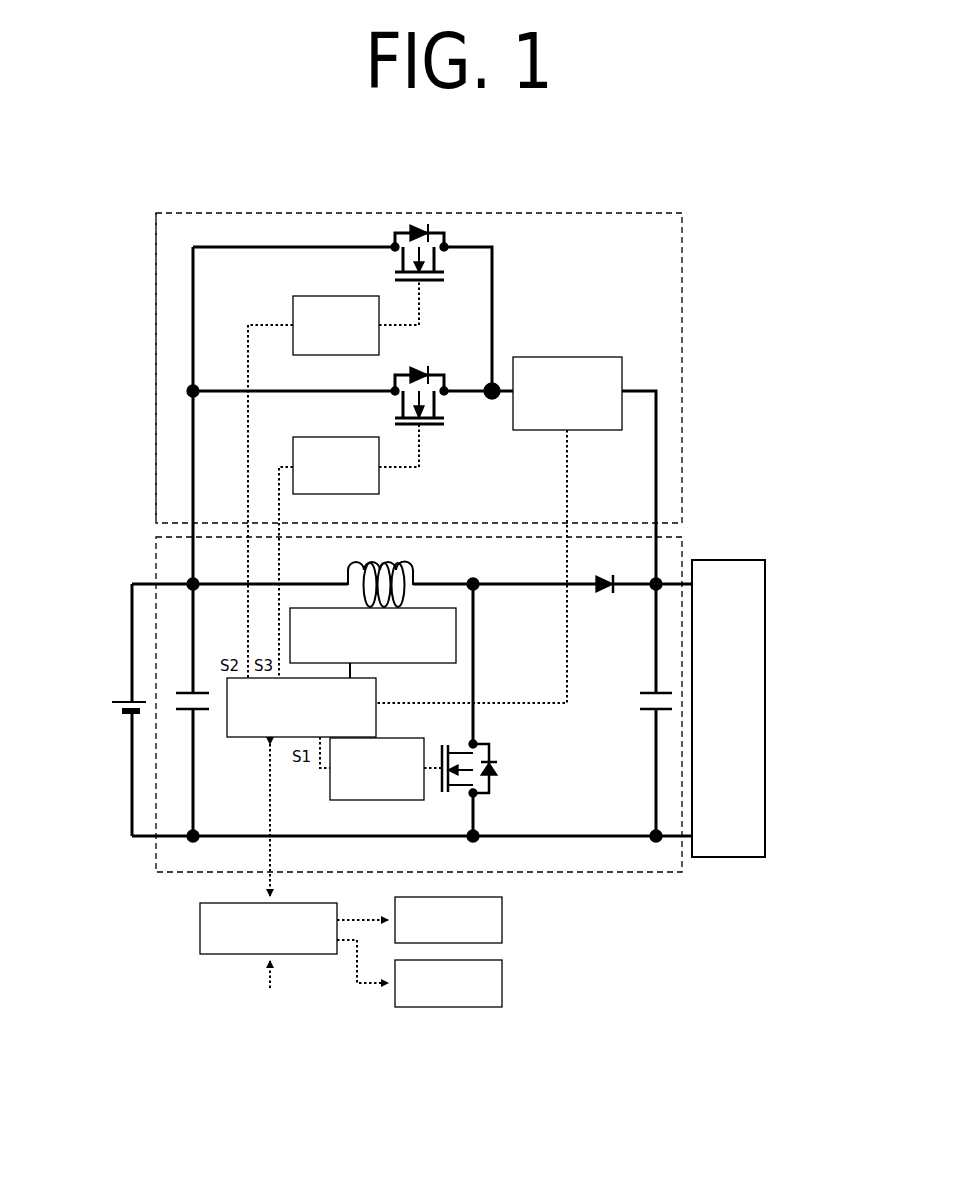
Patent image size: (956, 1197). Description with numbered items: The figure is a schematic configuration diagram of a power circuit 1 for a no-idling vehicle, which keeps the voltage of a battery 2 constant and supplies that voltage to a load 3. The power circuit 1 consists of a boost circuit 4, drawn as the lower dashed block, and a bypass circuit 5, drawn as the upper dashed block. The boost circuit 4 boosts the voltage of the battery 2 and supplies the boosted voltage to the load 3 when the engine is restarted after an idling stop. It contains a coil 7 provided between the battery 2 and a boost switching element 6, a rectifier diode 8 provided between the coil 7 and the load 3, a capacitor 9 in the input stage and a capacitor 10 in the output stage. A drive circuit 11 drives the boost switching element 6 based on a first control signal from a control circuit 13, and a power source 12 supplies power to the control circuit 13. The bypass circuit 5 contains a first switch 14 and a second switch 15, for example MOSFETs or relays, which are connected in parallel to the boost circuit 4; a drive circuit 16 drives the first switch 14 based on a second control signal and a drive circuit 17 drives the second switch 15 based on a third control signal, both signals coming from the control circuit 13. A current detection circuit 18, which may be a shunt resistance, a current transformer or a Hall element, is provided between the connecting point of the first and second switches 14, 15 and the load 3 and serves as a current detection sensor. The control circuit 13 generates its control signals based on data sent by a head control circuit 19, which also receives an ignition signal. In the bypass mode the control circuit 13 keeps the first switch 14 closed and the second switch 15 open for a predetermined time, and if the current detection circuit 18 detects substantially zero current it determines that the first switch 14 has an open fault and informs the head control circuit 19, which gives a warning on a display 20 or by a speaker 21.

The power circuit 1 is at (419, 206).
The battery 2 is at (127, 700).
The load 3 is at (726, 560).
The boost circuit 4 is at (628, 873).
The bypass circuit 5 is at (682, 375).
The boost switching element 6 is at (458, 793).
The coil 7 is at (414, 566).
The rectifier diode 8 is at (604, 576).
The capacitor 9 is at (185, 692).
The capacitor 10 is at (648, 692).
The drive circuit 11 is at (375, 800).
The power source 12 is at (425, 664).
The control circuit 13 is at (378, 688).
The first switch 14 is at (437, 258).
The second switch 15 is at (437, 402).
The drive circuit 16 is at (380, 339).
The drive circuit 17 is at (380, 484).
The current detection circuit 18 is at (571, 357).
The head control circuit 19 is at (200, 928).
The display 20 is at (502, 921).
The speaker 21 is at (502, 984).